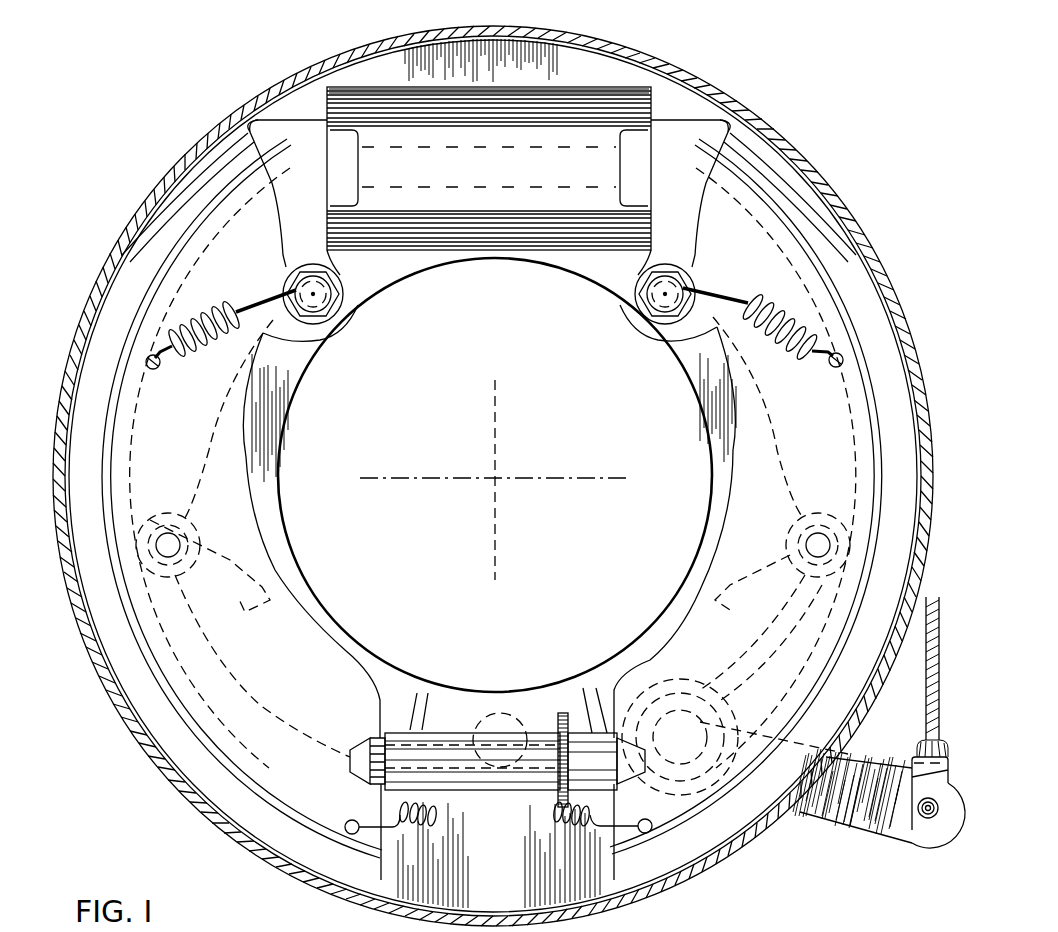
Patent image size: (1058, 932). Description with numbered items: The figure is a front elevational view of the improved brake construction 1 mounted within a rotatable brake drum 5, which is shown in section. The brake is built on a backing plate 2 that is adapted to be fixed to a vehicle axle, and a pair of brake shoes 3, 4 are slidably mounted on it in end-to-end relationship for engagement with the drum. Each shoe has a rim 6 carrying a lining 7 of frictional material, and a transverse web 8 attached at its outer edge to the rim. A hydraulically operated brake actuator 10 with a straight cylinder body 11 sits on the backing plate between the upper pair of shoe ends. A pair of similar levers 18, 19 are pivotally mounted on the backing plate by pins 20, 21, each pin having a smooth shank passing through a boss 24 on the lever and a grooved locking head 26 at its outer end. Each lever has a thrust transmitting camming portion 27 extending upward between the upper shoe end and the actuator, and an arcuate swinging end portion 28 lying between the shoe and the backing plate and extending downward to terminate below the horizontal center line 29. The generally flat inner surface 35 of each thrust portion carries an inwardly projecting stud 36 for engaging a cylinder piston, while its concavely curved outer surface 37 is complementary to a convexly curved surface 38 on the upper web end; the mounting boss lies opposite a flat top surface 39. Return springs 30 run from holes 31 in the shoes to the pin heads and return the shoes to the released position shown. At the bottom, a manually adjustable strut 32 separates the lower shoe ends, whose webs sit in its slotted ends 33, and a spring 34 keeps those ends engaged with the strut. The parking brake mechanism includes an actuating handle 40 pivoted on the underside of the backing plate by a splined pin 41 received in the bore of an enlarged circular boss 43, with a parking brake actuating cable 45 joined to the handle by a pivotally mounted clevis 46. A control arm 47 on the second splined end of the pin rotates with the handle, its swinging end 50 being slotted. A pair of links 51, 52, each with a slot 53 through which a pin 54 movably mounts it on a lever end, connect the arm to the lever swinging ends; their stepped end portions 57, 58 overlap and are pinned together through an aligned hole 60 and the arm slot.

The brake construction 1 is at (776, 116).
The backing plate 2 is at (432, 258).
The brake shoe 3 is at (735, 384).
The brake shoe 4 is at (233, 482).
The brake drum 5 is at (855, 215).
The rim 6 is at (188, 705).
The lining 7 is at (130, 687).
The web 8 is at (262, 508).
The brake actuator 10 is at (517, 163).
The cylinder body 11 is at (603, 100).
The lever 18 is at (684, 350).
The lever 19 is at (320, 350).
The pin 20 is at (651, 305).
The pin 21 is at (332, 298).
The boss 24 is at (640, 300).
The locking head 26 is at (672, 265).
The thrust transmitting camming portion 27 is at (286, 199).
The swinging end portion 28 is at (213, 453).
The horizontal center line 29 is at (551, 472).
The return spring 30 is at (214, 304).
The hole 31 is at (150, 352).
The strut 32 is at (506, 758).
The slotted end 33 is at (358, 740).
The spring 34 is at (380, 805).
The inner surface 35 is at (333, 233).
The stud 36 is at (362, 186).
The outer surface 37 is at (256, 140).
The convexly curved surface 38 is at (276, 210).
The top surface 39 is at (305, 114).
The actuating handle 40 is at (848, 790).
The splined pin 41 is at (705, 690).
The circular boss 43 is at (760, 735).
The parking brake actuating cable 45 is at (930, 690).
The clevis 46 is at (916, 812).
The control arm 47 is at (450, 795).
The swinging end 50 is at (382, 728).
The link 51 is at (686, 603).
The link 52 is at (312, 620).
The slot 53 is at (238, 595).
The pin 54 is at (175, 520).
The stepped end portion 57 is at (595, 693).
The stepped end portion 58 is at (552, 718).
The hole 60 is at (500, 558).